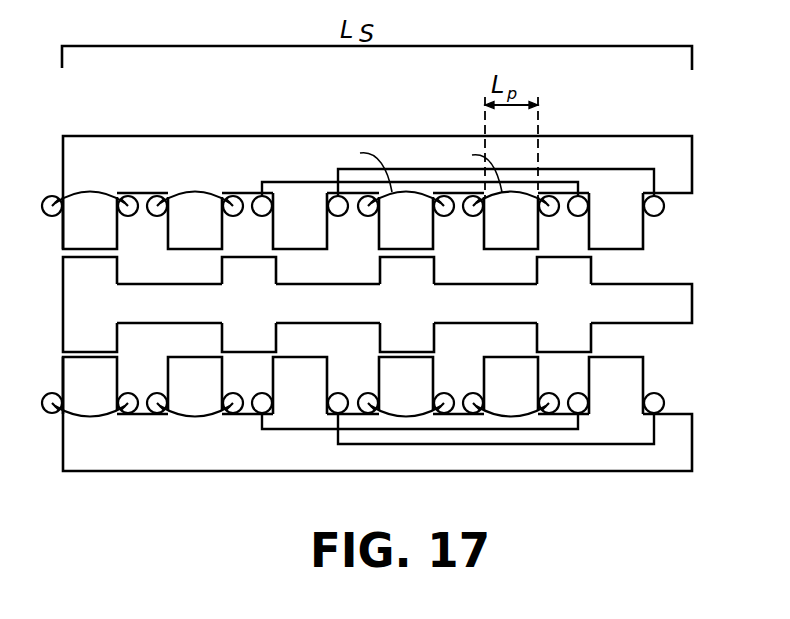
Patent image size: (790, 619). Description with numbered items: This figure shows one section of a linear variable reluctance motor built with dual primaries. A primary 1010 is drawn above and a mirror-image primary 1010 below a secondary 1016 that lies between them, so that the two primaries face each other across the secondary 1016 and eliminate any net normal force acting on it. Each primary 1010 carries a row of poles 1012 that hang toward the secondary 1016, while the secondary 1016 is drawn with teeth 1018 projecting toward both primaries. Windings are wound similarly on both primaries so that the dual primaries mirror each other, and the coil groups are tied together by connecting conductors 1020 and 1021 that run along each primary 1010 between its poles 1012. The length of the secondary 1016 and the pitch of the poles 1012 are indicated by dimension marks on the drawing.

The primary 1010 is at (367, 301).
The primary pole 1012 is at (353, 303).
The secondary 1016 is at (399, 303).
The secondary tooth 1018 is at (327, 304).
The connecting conductor 1020 is at (598, 170).
The connecting conductor 1021 is at (558, 182).